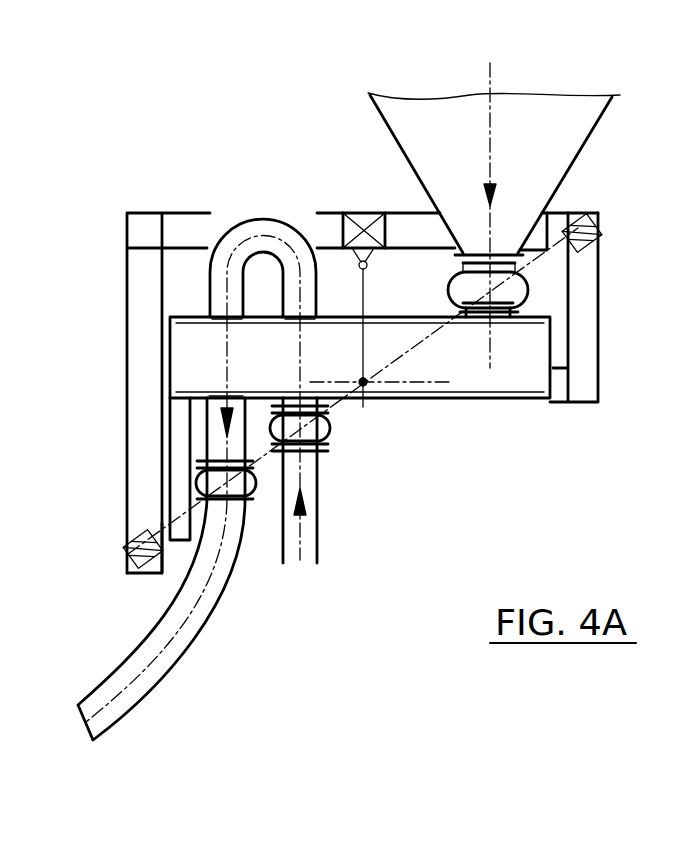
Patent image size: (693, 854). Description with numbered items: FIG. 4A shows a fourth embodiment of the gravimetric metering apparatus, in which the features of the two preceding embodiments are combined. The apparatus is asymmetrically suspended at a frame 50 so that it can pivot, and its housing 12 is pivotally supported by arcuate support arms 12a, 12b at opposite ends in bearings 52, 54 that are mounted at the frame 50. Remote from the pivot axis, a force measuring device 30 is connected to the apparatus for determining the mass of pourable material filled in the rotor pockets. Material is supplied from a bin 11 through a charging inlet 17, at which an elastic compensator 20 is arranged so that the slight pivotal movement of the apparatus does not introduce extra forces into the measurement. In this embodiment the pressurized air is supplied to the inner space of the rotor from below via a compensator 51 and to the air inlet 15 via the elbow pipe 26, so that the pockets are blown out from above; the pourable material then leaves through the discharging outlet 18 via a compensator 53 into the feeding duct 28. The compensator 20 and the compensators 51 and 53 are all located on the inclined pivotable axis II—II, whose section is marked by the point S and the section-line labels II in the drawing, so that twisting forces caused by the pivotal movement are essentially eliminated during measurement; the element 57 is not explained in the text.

The bin 11 is at (593, 130).
The housing 12 is at (497, 400).
The arcuate support arm 12a is at (583, 373).
The arcuate support arm 12b is at (178, 457).
The air inlet 15 is at (224, 316).
The charging inlet 17 is at (515, 305).
The discharging outlet 18 is at (217, 402).
The compensator 20 is at (533, 285).
The elbow pipe 26 is at (237, 239).
The feeding duct 28 is at (195, 650).
The force measuring device 30 is at (363, 222).
The frame 50 is at (147, 233).
The compensator 51 is at (329, 432).
The bearing 52 is at (127, 522).
The compensator 53 is at (250, 505).
The bearing 54 is at (568, 215).
The seal 57 is at (306, 303).
The pivot point S is at (380, 368).
The pivotable axis II— II is at (608, 208).